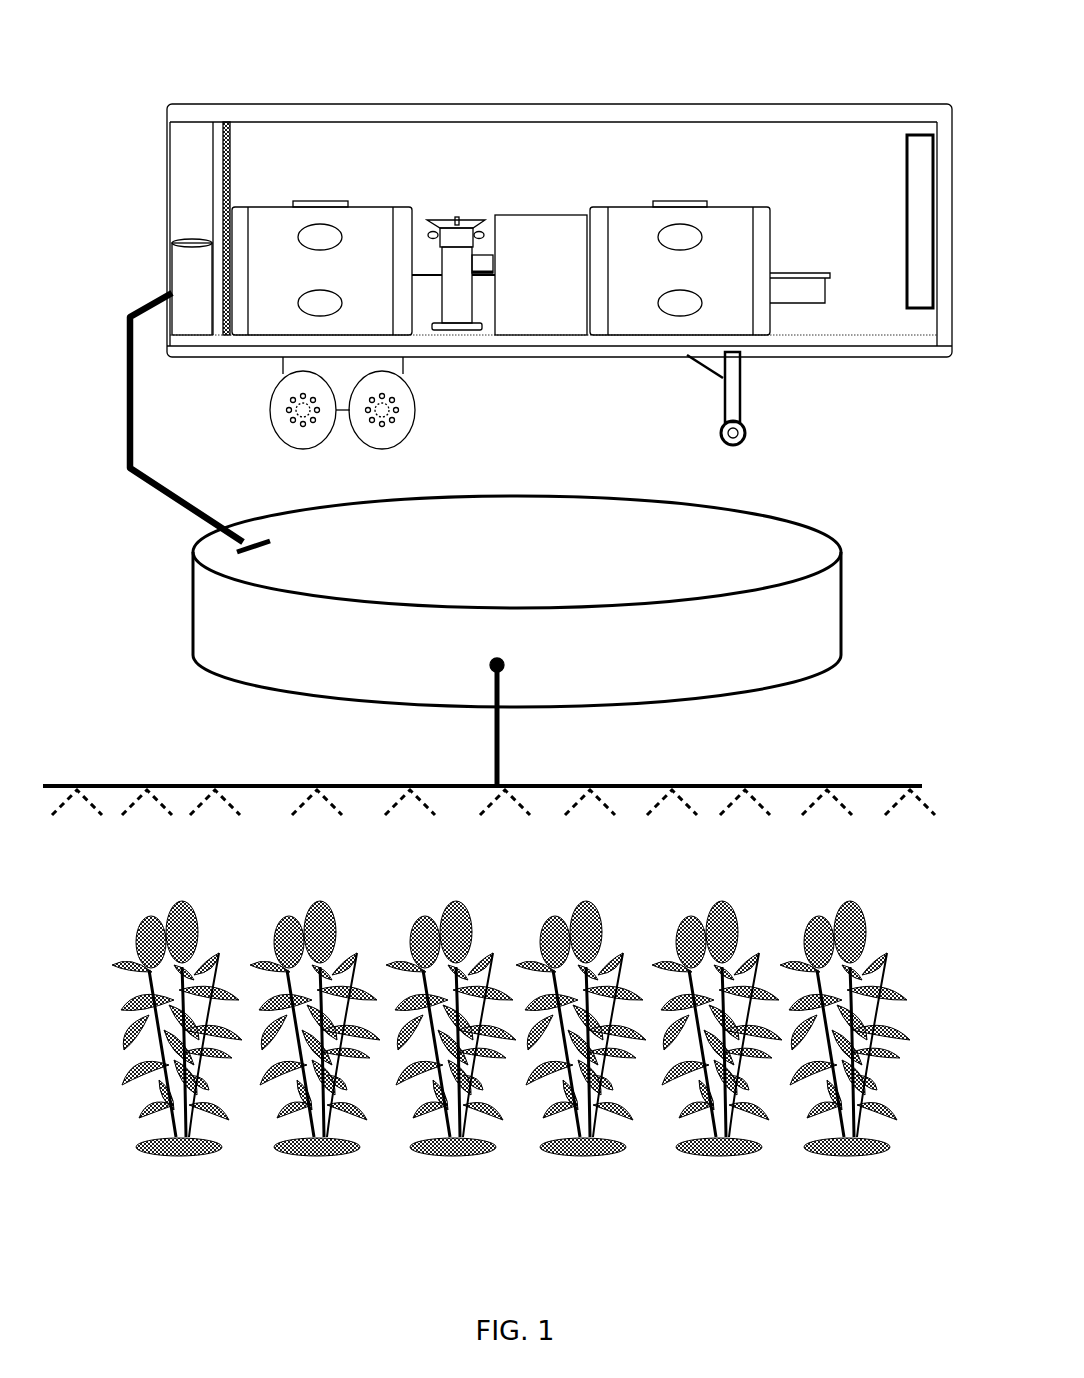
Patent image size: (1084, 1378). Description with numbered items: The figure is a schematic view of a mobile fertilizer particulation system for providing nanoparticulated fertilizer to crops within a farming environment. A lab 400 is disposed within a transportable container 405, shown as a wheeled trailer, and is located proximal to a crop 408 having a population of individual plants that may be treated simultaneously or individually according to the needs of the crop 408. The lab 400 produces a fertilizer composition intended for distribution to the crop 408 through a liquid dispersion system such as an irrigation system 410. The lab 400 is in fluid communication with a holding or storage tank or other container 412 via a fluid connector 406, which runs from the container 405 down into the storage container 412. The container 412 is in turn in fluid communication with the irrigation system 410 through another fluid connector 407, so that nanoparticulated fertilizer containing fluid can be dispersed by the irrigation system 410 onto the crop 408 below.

The lab 400 is at (501, 185).
The transportable container 405 is at (559, 230).
The fluid connector 406 is at (162, 389).
The fluid connector 407 is at (425, 722).
The crop 408 is at (511, 1004).
The irrigation system 410 is at (502, 751).
The storage tank 412 is at (537, 590).